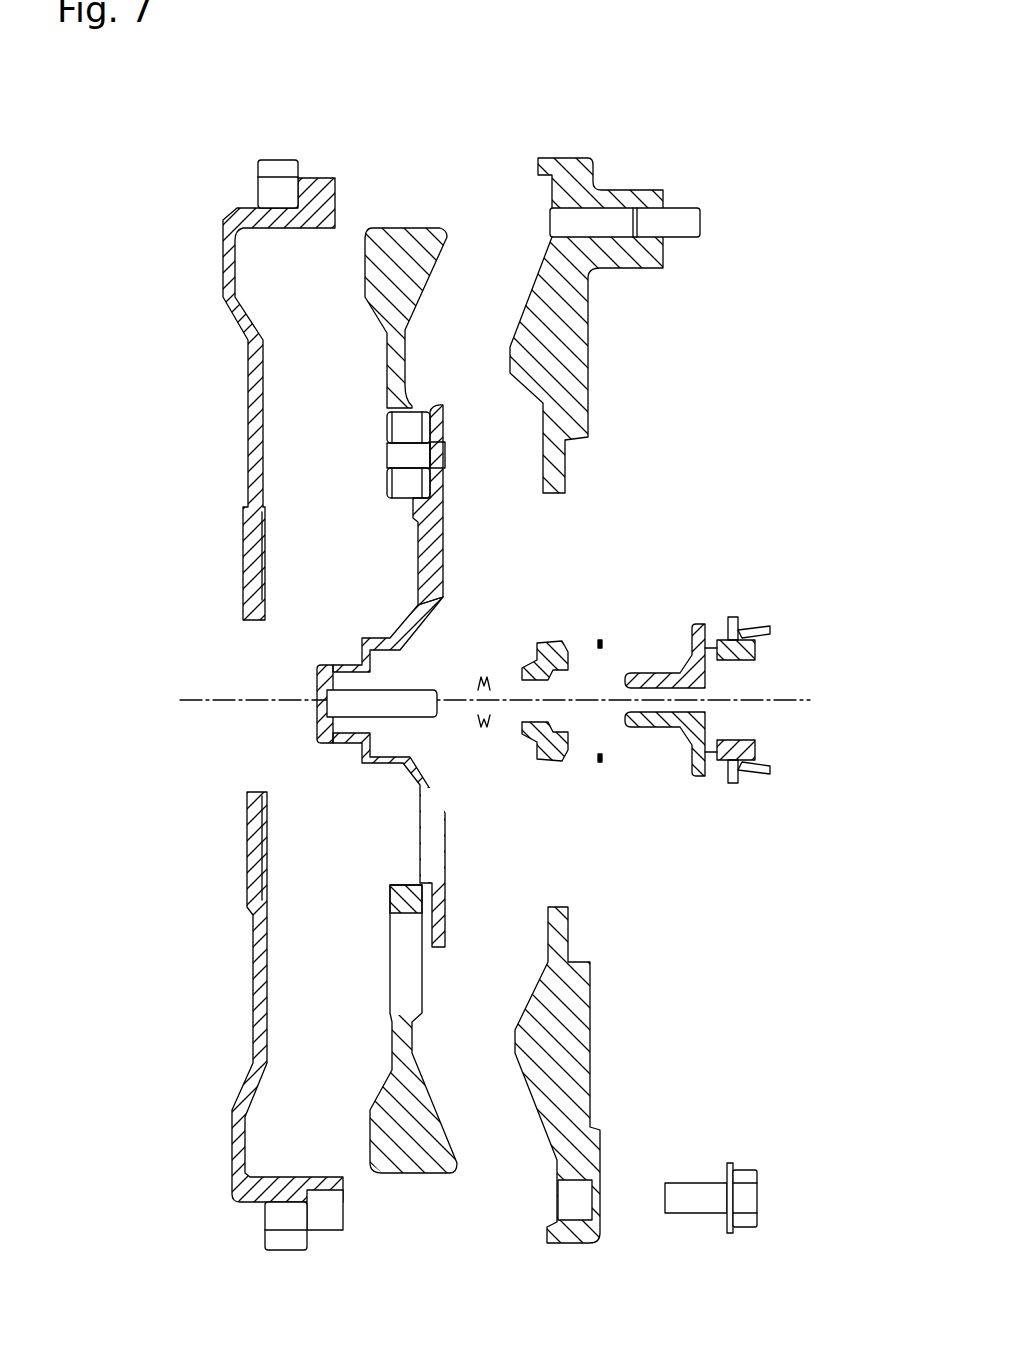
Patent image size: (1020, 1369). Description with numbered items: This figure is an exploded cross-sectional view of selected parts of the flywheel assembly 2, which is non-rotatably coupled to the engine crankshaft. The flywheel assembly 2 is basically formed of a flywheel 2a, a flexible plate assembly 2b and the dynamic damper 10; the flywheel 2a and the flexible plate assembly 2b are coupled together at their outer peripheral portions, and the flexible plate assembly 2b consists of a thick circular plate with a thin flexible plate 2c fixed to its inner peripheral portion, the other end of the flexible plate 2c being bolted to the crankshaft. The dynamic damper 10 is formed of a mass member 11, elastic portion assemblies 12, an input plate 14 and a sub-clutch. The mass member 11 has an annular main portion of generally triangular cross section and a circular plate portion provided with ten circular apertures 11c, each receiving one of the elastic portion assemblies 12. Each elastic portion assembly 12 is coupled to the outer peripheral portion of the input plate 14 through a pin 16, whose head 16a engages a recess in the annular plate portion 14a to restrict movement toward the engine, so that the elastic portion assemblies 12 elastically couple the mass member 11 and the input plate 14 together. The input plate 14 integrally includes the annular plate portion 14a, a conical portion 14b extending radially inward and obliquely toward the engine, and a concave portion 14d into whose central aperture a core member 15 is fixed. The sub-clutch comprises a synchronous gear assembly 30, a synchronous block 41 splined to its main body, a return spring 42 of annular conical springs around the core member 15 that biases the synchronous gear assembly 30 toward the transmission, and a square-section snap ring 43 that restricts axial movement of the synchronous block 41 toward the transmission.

The flywheel assembly 2 is at (514, 111).
The flywheel 2a is at (565, 338).
The flexible plate assembly 2b is at (246, 373).
The thin flexible plate 2c is at (268, 875).
The dynamic damper 10 is at (399, 212).
The mass member 11 is at (364, 277).
The circular apertures 11c is at (392, 1028).
The elastic portion assemblies 12 is at (384, 478).
The input plate 14 is at (456, 545).
The annular plate portion 14a is at (430, 567).
The conical portion 14b is at (418, 626).
The concave portion 14d is at (322, 750).
The core member 15 is at (405, 695).
The pin 16 is at (383, 449).
The heads 16a is at (446, 456).
The synchronous gear assembly 30 is at (668, 610).
The synchronous block 41 is at (537, 749).
The return spring 42 is at (500, 670).
The snap ring 43 is at (605, 766).